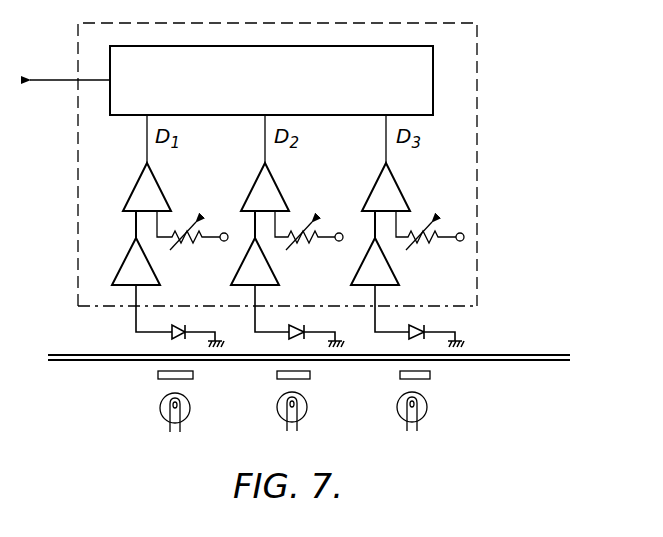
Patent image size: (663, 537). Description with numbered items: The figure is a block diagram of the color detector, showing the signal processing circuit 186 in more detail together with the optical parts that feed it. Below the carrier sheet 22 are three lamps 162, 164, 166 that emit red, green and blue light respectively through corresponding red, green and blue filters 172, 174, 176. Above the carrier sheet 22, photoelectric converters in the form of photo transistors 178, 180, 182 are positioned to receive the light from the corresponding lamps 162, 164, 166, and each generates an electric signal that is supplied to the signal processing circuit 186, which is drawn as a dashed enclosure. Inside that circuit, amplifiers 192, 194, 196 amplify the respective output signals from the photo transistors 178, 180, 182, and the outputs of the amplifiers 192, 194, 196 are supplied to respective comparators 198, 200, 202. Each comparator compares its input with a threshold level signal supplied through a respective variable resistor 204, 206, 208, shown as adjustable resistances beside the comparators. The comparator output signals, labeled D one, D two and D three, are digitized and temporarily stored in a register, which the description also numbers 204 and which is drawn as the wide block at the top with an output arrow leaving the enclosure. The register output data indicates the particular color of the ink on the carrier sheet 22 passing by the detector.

The carrier sheet 22 is at (528, 355).
The lamp 162 is at (168, 426).
The lamp 164 is at (286, 426).
The lamp 166 is at (405, 426).
The red filter 172 is at (158, 376).
The green filter 174 is at (277, 376).
The blue filter 176 is at (400, 376).
The photo transistor 178 is at (170, 333).
The photo transistor 180 is at (305, 327).
The photo transistor 182 is at (425, 330).
The signal processing circuit 186 is at (473, 115).
The amplifier 192 is at (128, 269).
The amplifier 194 is at (247, 272).
The amplifier 196 is at (383, 272).
The comparator 198 is at (153, 188).
The comparator 200 is at (268, 188).
The comparator 202 is at (388, 188).
The variable resistor / register 204 is at (425, 80).
The variable resistor 206 is at (305, 242).
The variable resistor 208 is at (428, 242).